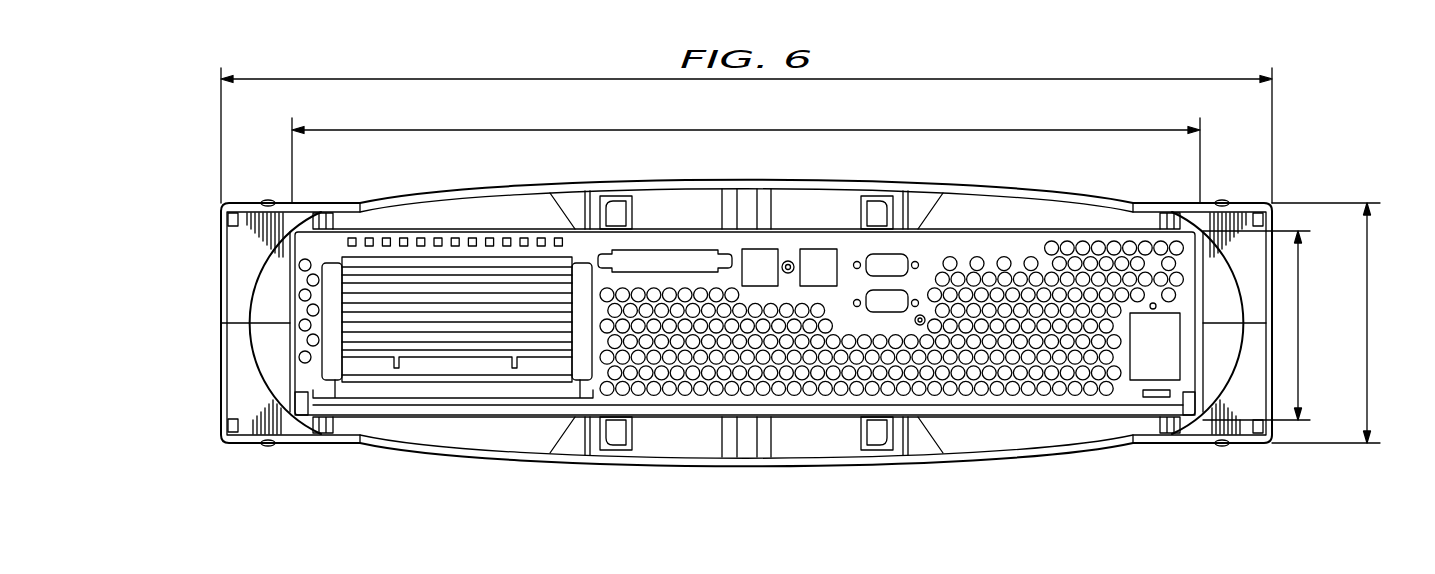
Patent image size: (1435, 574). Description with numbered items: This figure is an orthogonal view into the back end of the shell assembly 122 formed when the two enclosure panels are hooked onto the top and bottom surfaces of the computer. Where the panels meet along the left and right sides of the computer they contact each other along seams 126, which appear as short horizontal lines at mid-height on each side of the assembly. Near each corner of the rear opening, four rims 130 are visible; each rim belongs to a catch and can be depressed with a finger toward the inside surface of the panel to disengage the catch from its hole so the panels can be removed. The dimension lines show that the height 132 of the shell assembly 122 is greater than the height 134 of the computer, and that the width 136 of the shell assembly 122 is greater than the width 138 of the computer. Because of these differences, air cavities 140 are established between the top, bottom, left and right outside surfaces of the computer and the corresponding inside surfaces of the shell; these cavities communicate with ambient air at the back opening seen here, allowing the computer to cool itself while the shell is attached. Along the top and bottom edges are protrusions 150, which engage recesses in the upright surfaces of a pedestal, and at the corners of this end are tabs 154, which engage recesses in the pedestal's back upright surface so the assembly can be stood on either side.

The shell assembly 122 is at (150, 205).
The seams 126 is at (1266, 324).
The rim 130 is at (878, 440).
The height of shell assembly 132 is at (1367, 325).
The height of computer 134 is at (1298, 352).
The width of shell assembly 136 is at (496, 78).
The width of computer 138 is at (496, 129).
The air cavities 140 is at (998, 435).
The protrusion 150 is at (1222, 446).
The tab 154 is at (1260, 424).